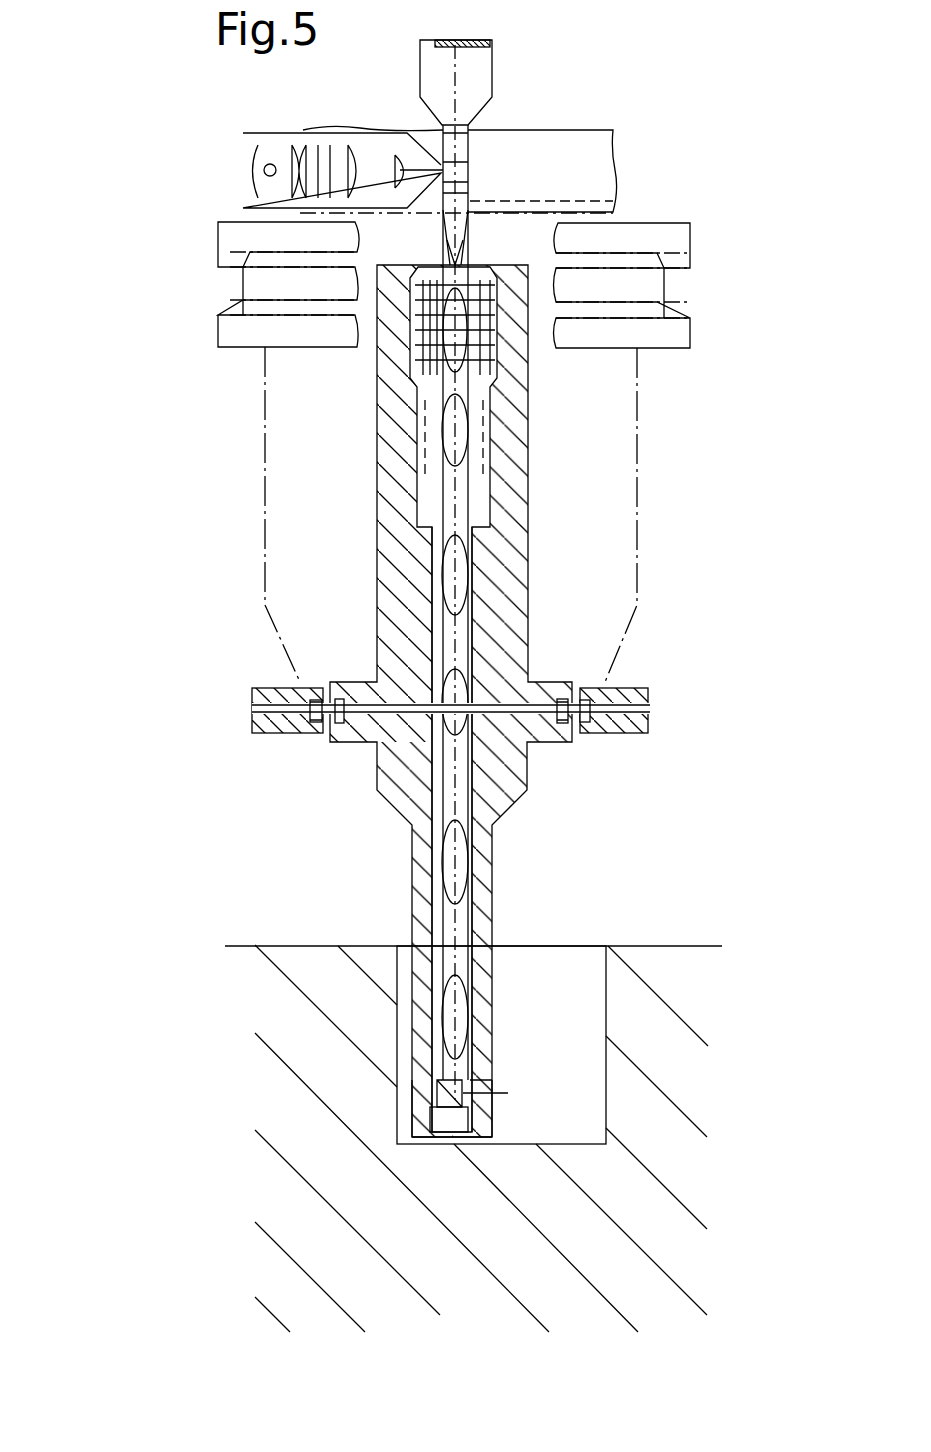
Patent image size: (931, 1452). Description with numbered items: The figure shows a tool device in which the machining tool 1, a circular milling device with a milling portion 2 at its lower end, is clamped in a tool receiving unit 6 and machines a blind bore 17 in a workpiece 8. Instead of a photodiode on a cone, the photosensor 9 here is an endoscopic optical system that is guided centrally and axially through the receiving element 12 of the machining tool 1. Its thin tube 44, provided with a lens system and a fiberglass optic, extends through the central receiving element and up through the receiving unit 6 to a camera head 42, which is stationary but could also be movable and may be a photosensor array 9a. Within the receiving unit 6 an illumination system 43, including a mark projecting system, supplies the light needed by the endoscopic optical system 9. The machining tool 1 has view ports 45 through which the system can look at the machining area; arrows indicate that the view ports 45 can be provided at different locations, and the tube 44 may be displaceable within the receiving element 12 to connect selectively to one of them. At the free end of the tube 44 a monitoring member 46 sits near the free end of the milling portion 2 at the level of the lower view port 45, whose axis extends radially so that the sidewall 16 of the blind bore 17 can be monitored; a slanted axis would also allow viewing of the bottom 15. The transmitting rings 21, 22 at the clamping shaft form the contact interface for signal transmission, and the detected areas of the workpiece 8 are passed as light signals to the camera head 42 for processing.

The machining tool 1 is at (385, 583).
The milling portion 2 is at (430, 1050).
The tool receiving unit 6 is at (612, 398).
The workpiece 8 is at (280, 1016).
The endoscopic optical system 9 is at (478, 553).
The photosensor array 9a is at (488, 43).
The receiving element 12 is at (473, 579).
The bottom 15 is at (432, 1148).
The sidewall 16 is at (606, 1075).
The blind bore 17 is at (580, 1100).
The transmitting ring 21 is at (272, 697).
The further transmitting ring 22 is at (340, 742).
The camera head 42 is at (478, 77).
The illumination system 43 is at (333, 145).
The thin tube 44 is at (470, 621).
The view port 45 is at (562, 760).
The monitoring member 46 is at (410, 1110).